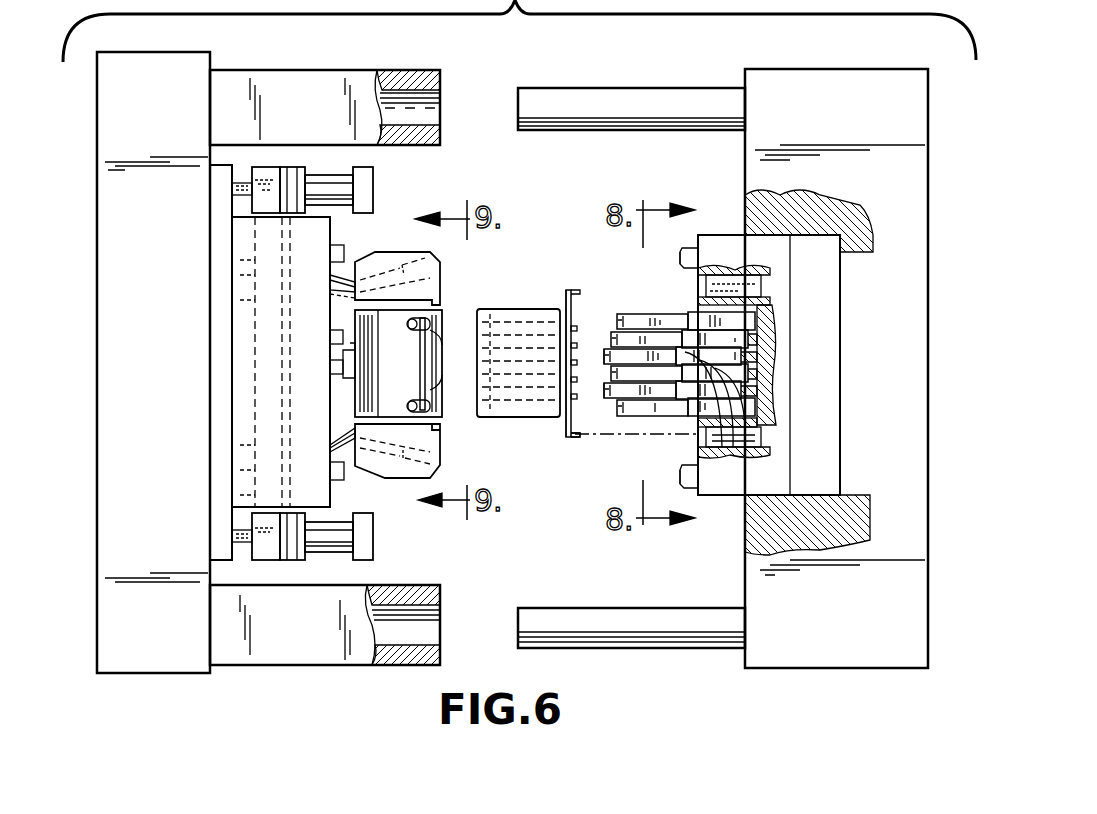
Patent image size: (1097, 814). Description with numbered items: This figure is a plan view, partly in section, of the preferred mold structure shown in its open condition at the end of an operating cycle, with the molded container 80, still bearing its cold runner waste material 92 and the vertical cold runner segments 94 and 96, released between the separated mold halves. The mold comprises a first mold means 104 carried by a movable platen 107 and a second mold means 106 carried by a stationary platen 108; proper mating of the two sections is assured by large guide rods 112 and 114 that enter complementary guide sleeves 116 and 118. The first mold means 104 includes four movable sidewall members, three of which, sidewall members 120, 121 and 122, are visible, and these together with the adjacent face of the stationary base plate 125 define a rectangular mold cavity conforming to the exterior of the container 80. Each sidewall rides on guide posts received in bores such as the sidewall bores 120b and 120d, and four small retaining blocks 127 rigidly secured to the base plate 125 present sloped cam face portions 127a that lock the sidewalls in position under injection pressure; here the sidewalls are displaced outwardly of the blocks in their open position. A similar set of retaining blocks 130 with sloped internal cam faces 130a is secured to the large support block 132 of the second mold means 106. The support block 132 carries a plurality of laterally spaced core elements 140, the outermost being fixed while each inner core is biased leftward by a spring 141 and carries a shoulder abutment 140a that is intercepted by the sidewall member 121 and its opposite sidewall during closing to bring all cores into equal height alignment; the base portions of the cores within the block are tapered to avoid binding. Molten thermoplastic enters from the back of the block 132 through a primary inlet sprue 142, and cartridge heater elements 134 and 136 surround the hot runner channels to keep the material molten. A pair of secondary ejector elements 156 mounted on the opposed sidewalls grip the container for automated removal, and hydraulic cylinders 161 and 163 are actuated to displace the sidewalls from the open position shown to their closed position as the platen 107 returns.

The container 80 is at (537, 302).
The cold runner waste material 92 is at (560, 434).
The vertical cold runner segment 94 is at (575, 292).
The vertical cold runner segment 96 is at (574, 438).
The first mold means 104 is at (420, 514).
The second mold means 106 is at (623, 453).
The platen 107 is at (100, 300).
The platen 108 is at (920, 330).
The guide rod 112 is at (588, 100).
The guide rod 114 is at (651, 626).
The guide sleeve 116 is at (294, 640).
The guide sleeve 118 is at (403, 72).
The sidewall member 120 is at (445, 291).
The sidewall bore 120b is at (447, 252).
The sidewall bore 120d is at (345, 290).
The sidewall member 121 is at (418, 378).
The sidewall member 122 is at (440, 442).
The base plate 125 is at (313, 225).
The retaining block 127 is at (344, 262).
The sloped cam face portion 127a is at (335, 282).
The retaining block 130 is at (690, 250).
The sloped internal cam face 130a is at (680, 265).
The support block 132 is at (718, 235).
The cartridge heater element 134 is at (768, 290).
The cartridge heater element 136 is at (762, 437).
The core element 140 is at (612, 340).
The shoulder abutment 140a is at (738, 450).
The spring 141 is at (772, 368).
The primary inlet sprue 142 is at (702, 296).
The secondary ejector element 156 is at (412, 406).
The hydraulic cylinder 161 is at (365, 187).
The hydraulic cylinder 163 is at (373, 536).